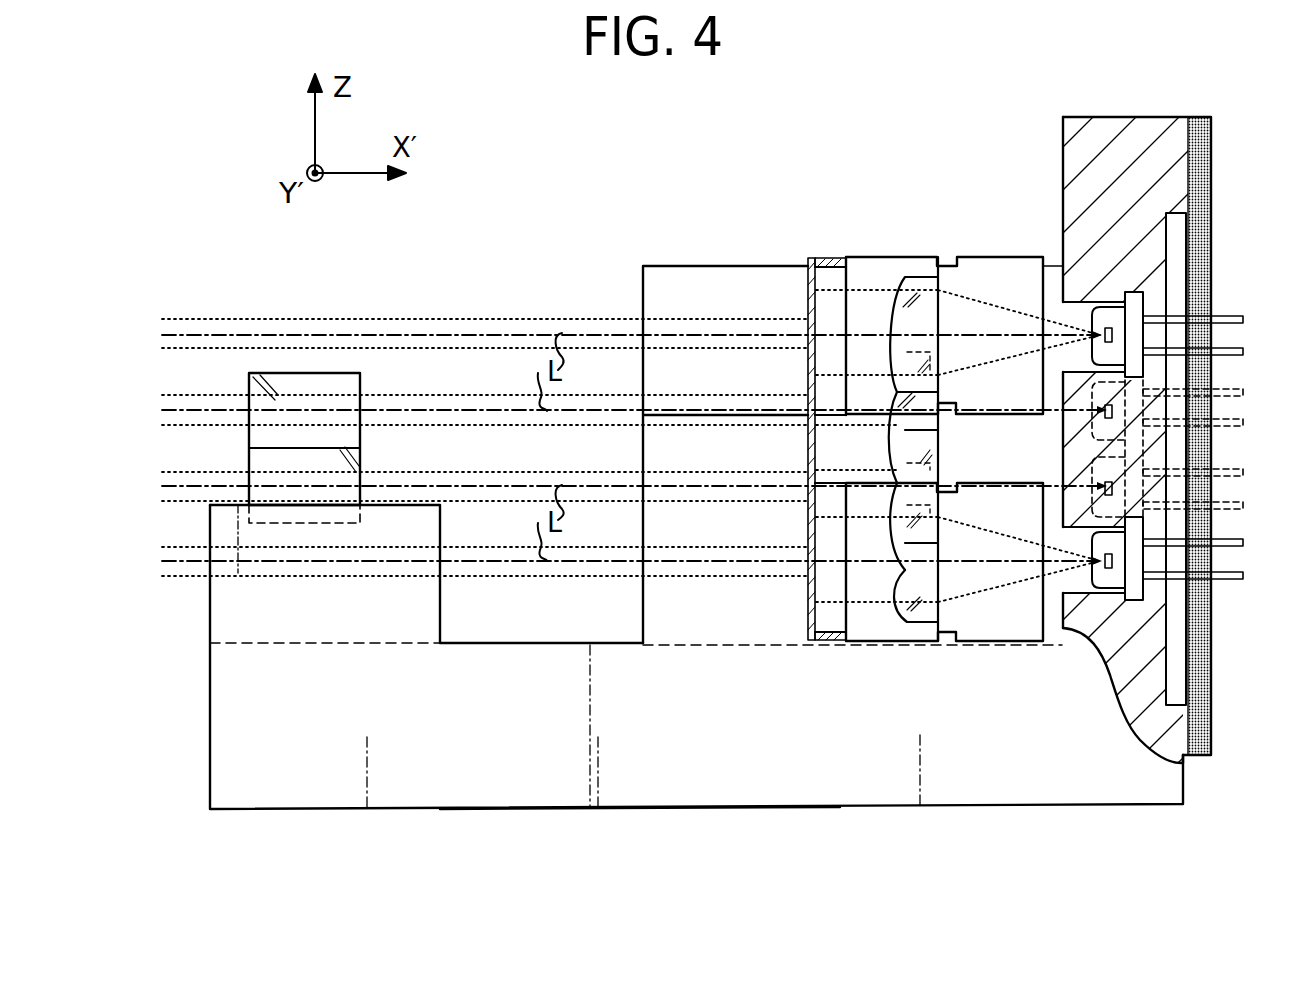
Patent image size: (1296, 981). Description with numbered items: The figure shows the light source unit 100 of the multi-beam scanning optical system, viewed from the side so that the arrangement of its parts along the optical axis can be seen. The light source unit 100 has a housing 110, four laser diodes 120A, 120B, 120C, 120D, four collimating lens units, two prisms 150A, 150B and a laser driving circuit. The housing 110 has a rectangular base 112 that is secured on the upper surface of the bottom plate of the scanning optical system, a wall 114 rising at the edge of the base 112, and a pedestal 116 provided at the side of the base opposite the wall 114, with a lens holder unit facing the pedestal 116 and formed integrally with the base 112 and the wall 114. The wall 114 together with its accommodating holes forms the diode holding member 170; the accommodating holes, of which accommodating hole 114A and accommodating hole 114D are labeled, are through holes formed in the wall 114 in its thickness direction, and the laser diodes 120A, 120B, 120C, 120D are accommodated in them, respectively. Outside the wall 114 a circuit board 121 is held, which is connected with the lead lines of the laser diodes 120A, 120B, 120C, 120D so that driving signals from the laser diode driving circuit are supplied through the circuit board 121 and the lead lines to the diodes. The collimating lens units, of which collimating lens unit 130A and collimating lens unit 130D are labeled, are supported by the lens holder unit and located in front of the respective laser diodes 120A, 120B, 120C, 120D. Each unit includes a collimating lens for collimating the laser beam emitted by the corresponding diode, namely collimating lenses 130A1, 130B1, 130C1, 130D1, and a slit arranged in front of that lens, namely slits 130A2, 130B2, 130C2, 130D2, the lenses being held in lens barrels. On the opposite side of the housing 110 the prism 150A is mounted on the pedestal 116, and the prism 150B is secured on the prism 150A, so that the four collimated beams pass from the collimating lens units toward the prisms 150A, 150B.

The light source unit 100 is at (1037, 52).
The housing 110 is at (880, 814).
The base 112 is at (582, 783).
The wall 114 is at (1128, 142).
The accommodating hole 114A is at (1077, 593).
The accommodating hole 114D is at (1056, 305).
The pedestal 116 is at (278, 630).
The laser diode 120A is at (1062, 545).
The laser diode 120B is at (1100, 490).
The laser diode 120C is at (1108, 428).
The laser diode 120D is at (1110, 317).
The circuit board 121 is at (1210, 282).
The collimating lens unit 130A is at (975, 650).
The collimating lens 130A1 is at (895, 580).
The slit 130A2 is at (815, 555).
The collimating lens 130B1 is at (903, 497).
The slit 130B2 is at (815, 478).
The collimating lens 130C1 is at (897, 400).
The slit 130C2 is at (815, 400).
The collimating lens unit 130D is at (985, 250).
The collimating lens 130D1 is at (920, 278).
The slit 130D2 is at (815, 320).
The prism 150A is at (338, 525).
The prism 150B is at (320, 372).
The diode holding member 170 is at (1150, 256).